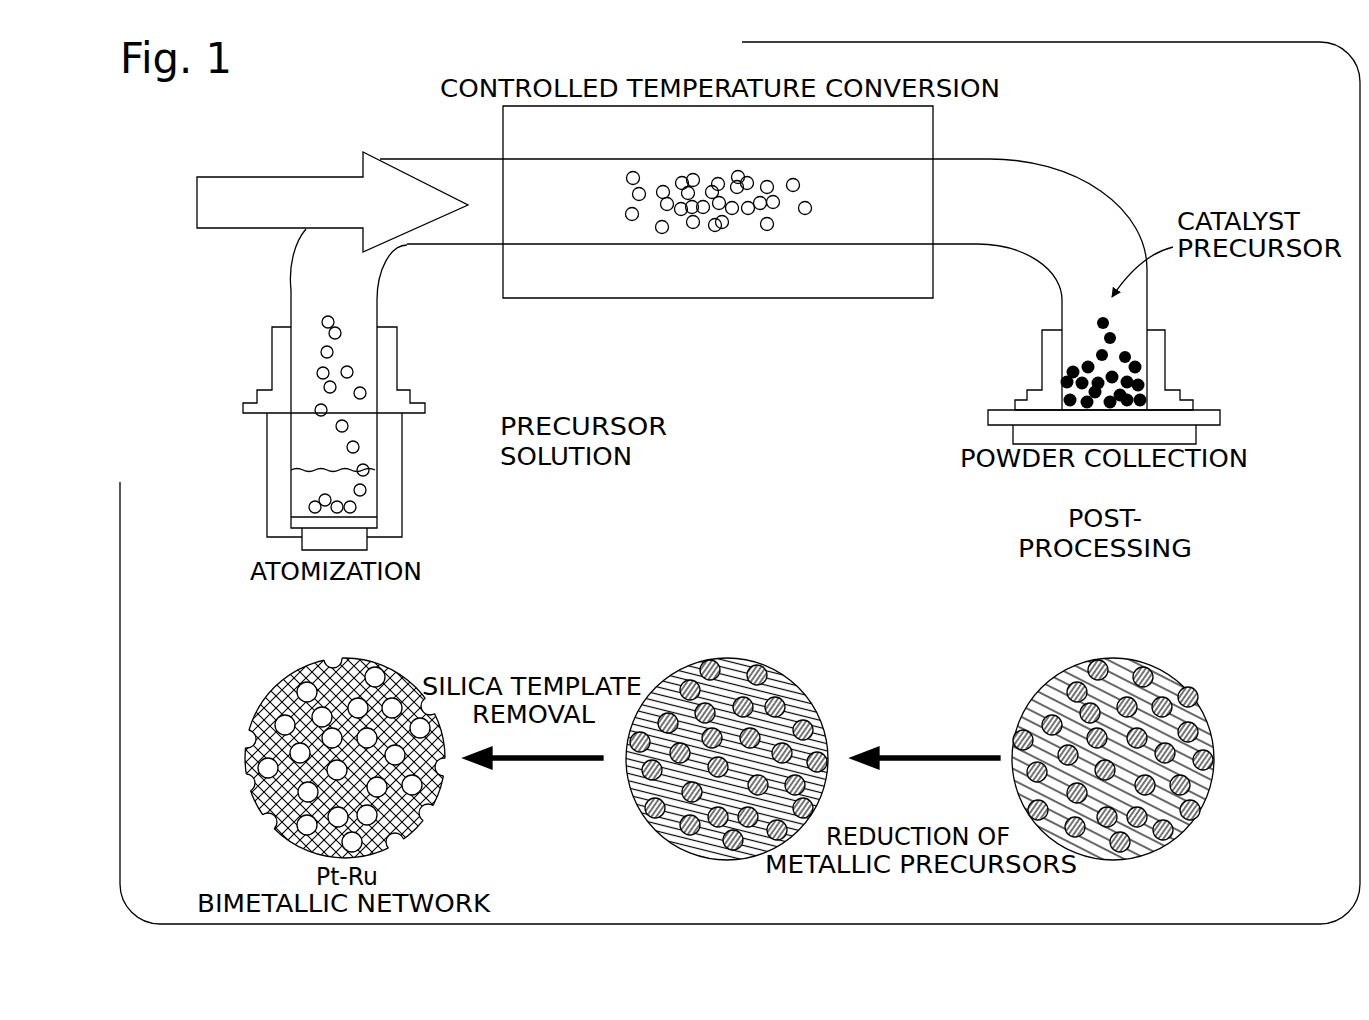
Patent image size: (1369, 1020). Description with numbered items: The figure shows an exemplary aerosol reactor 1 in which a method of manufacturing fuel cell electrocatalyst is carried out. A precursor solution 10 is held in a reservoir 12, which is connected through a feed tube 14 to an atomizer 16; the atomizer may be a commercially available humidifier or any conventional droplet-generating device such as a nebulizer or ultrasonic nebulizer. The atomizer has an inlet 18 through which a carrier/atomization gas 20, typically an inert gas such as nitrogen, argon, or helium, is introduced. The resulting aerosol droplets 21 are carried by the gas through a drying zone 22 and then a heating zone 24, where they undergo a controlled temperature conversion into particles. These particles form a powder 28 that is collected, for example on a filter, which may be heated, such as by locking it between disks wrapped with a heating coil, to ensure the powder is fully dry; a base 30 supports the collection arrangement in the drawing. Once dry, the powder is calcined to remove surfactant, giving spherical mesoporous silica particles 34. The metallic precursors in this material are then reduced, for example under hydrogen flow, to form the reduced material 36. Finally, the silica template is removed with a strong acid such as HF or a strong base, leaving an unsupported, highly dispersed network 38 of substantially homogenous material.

The aerosol reactor 1 is at (1129, 105).
The precursor solution 10 is at (351, 496).
The reservoir 12 is at (266, 470).
The feed tube 14 is at (370, 336).
The atomizer 16 is at (369, 546).
The inlet 18 is at (285, 240).
The carrier/atomization gas 20 is at (430, 216).
The aerosol droplets 21 is at (329, 315).
The drying zone 22 is at (579, 304).
The heating zone 24 is at (847, 304).
The powder / filter 28 is at (1133, 335).
The collection base 30 is at (1222, 417).
The spherical mesoporous silica particles 34 is at (1131, 652).
The reduced material 36 is at (741, 652).
The unsupported highly dispersed network 38 is at (374, 652).